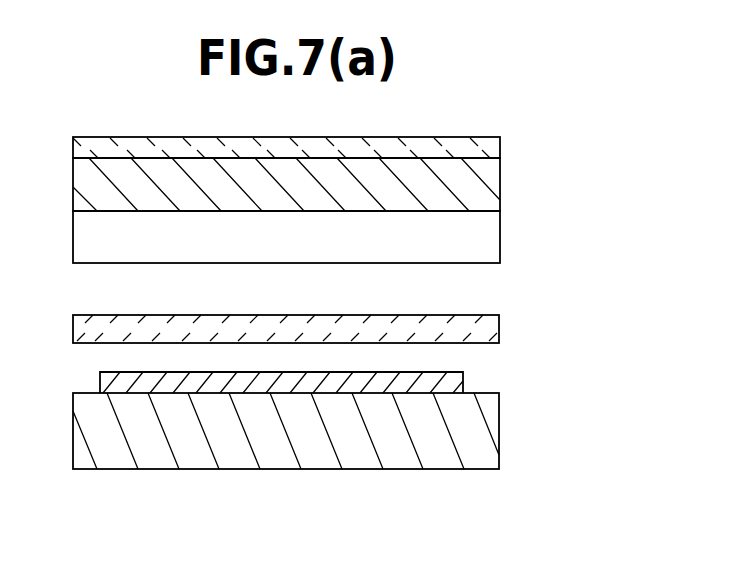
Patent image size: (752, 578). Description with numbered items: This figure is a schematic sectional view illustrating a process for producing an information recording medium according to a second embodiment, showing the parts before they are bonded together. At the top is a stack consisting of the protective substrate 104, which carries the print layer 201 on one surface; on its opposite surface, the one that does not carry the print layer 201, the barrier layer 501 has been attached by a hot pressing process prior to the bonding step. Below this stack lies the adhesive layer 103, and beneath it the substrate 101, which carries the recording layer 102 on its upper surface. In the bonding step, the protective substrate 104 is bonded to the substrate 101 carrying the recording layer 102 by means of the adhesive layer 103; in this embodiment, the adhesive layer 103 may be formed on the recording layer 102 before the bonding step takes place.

The print layer 201 is at (487, 149).
The protective substrate 104 is at (485, 190).
The barrier layer 501 is at (487, 243).
The adhesive layer 103 is at (488, 333).
The recording layer 102 is at (455, 383).
The substrate 101 is at (488, 445).